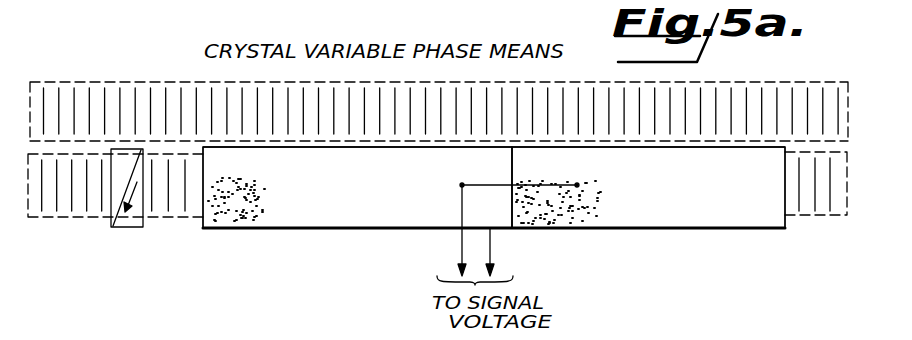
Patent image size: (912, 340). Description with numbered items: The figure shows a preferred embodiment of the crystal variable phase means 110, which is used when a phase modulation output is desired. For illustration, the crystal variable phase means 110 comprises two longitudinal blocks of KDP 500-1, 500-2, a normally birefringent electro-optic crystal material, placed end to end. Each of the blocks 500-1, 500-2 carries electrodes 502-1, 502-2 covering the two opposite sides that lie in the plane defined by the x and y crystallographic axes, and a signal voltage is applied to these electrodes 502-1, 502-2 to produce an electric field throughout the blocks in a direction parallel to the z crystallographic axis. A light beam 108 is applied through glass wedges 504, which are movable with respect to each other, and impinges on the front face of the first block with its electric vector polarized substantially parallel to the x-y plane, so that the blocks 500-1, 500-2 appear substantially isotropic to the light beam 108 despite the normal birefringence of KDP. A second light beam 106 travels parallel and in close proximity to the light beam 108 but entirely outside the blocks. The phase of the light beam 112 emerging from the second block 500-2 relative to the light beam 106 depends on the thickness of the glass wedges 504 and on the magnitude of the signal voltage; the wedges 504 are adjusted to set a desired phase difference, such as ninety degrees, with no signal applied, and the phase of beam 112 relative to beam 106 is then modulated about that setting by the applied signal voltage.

The light beam 106 is at (72, 82).
The light beam 108 is at (63, 211).
The crystal variable phase means 110 is at (494, 134).
The light beam 112 is at (816, 216).
The longitudinal block of KDP 500-1 is at (343, 228).
The longitudinal block of KDP 500-2 is at (628, 228).
The electrode 502-1 is at (240, 208).
The electrode 502-2 is at (566, 208).
The glass wedges 504 is at (127, 228).